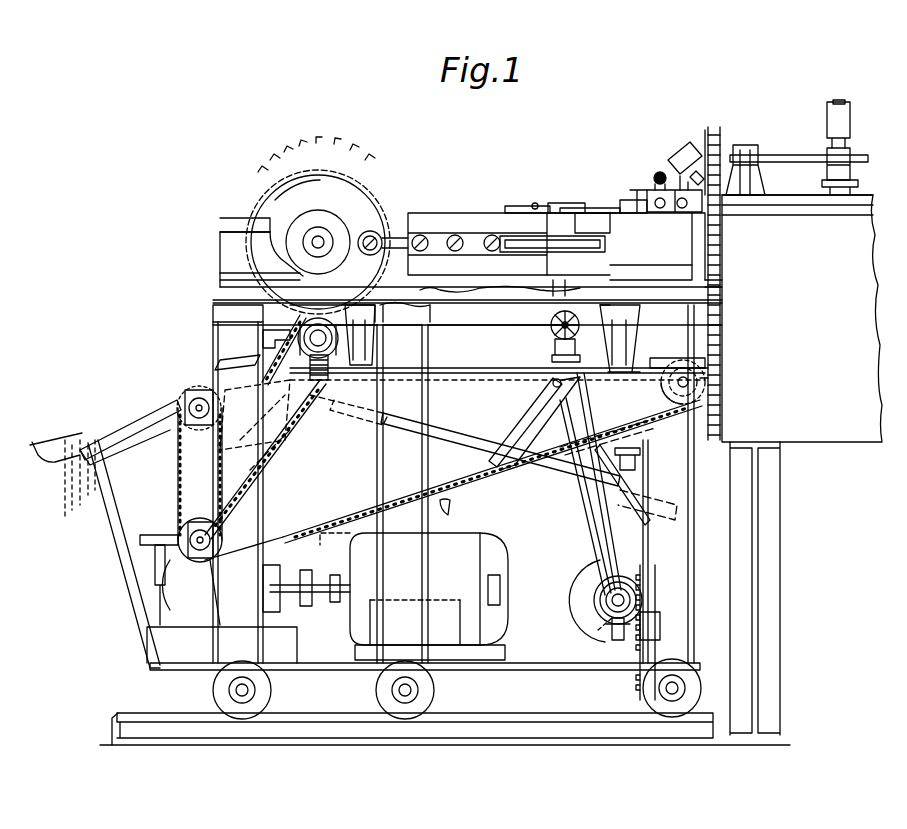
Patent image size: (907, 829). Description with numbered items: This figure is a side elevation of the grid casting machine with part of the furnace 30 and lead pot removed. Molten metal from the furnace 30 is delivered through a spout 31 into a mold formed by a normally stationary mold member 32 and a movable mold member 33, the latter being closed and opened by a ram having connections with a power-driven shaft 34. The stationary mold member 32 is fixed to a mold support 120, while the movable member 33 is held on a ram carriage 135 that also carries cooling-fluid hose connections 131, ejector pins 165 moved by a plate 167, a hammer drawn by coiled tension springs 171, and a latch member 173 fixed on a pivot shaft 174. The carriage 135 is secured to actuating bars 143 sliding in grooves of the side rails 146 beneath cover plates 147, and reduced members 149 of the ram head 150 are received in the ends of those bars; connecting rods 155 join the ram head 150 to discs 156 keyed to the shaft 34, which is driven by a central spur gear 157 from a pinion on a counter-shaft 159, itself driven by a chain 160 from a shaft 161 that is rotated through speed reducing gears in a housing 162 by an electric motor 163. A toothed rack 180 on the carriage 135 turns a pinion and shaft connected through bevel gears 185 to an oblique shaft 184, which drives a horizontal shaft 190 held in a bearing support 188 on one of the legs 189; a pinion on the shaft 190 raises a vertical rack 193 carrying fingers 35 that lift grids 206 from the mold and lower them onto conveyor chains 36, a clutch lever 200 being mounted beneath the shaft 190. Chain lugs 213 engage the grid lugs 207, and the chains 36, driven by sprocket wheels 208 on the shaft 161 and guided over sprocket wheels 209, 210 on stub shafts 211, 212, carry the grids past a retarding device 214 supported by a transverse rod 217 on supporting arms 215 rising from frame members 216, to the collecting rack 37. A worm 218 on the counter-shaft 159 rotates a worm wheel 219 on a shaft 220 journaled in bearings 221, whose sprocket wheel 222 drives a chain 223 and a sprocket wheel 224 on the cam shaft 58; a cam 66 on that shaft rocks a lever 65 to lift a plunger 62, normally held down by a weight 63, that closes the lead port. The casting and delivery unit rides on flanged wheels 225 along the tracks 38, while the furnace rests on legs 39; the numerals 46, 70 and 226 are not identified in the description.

The furnace 30 is at (802, 318).
The spout 31 is at (665, 170).
The stationary mold member 32 is at (698, 212).
The movable mold member 33 is at (640, 198).
The power-driven shaft 34 is at (372, 228).
The fingers 35 is at (633, 448).
The conveyor chains 36 is at (332, 523).
The collecting rack 37 is at (127, 418).
The tracks 38 is at (465, 734).
The legs 39 is at (750, 582).
The tank top 46 is at (827, 210).
The cam shaft 58 is at (777, 155).
The plunger 62 is at (835, 103).
The weight 63 is at (840, 121).
The lever 65 is at (841, 184).
The cam 66 is at (849, 163).
The rod 70 is at (689, 148).
The mold support 120 is at (690, 258).
The hose connections 131 is at (657, 175).
The ram carriage 135 is at (579, 226).
The actuating bar 143 is at (608, 242).
The side frame members or rails 146 is at (235, 248).
The cover plates 147 is at (228, 215).
The reduced members 149 is at (458, 213).
The ram head 150 is at (438, 196).
The connecting rods 155 is at (425, 210).
The discs 156 is at (270, 177).
The central spur gear 157 is at (309, 169).
The counter-shaft 159 is at (260, 292).
The chain 160 is at (262, 472).
The shaft 161 is at (145, 571).
The housing 162 is at (180, 537).
The electric motor 163 is at (512, 205).
The ejector pins 165 is at (385, 596).
The plate 167 is at (620, 188).
The coiled tension springs 171 is at (567, 198).
The latch member 173 is at (563, 205).
The pivot shaft 174 is at (535, 203).
The toothed rack 180 is at (492, 351).
The oblique shaft 184 is at (593, 461).
The bevel gears 185 is at (545, 330).
The bearing support 188 is at (605, 620).
The legs 189 is at (659, 570).
The horizontal shaft 190 is at (605, 593).
The vertical rack 193 is at (638, 681).
The clutch lever 200 is at (613, 538).
The grids 206 is at (83, 434).
The lugs 207 is at (63, 519).
The sprocket wheels 208 is at (243, 516).
The sprocket wheel 209 is at (193, 388).
The sprocket wheel 210 is at (688, 380).
The stub shaft 211 is at (213, 360).
The stub shaft 212 is at (735, 375).
The chain lugs 213 is at (430, 504).
The retarding device 214 is at (592, 433).
The supporting arms 215 is at (533, 428).
The frame members 216 is at (452, 428).
The transverse rod 217 is at (550, 385).
The worm 218 is at (325, 320).
The worm wheel 219 is at (290, 365).
The shaft 220 is at (450, 368).
The bearings 221 is at (398, 309).
The sprocket wheel 222 is at (702, 358).
The chain 223 is at (718, 300).
The sprocket wheel 224 is at (718, 133).
The flanged wheels 225 is at (210, 685).
The wheel 226 is at (375, 685).